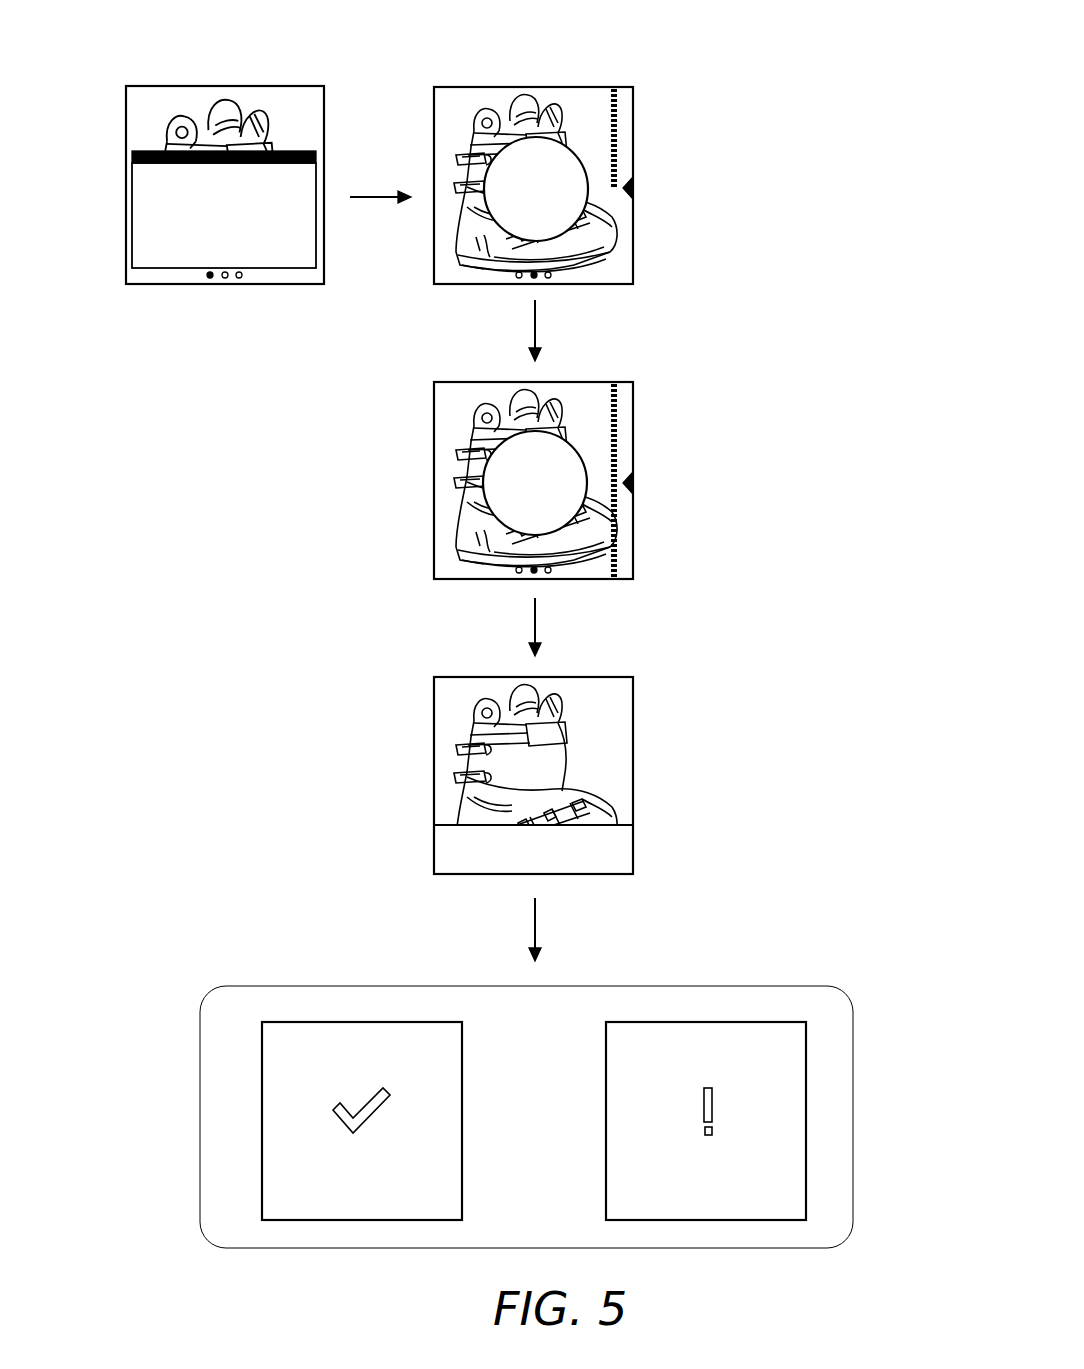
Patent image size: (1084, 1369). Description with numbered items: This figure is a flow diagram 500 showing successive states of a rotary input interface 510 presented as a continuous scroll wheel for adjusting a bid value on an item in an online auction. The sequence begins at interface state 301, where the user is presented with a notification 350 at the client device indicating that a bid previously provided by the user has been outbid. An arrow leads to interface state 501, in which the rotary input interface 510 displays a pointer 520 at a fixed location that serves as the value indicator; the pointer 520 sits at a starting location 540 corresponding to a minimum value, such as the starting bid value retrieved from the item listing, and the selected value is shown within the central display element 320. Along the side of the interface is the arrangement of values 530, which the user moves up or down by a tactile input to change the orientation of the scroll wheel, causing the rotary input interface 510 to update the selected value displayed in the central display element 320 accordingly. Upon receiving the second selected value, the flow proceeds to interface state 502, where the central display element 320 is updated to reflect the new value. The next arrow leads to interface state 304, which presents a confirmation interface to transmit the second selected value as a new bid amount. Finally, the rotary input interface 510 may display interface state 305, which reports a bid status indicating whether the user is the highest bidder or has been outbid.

The user interface flow for raising a bid 500 is at (857, 72).
The interface state 301 is at (244, 178).
The notification 350 is at (133, 287).
The central display element 320 is at (455, 245).
The interface state 501 is at (548, 196).
The arrangement of values 530 is at (620, 97).
The pointer 520 is at (634, 185).
The rotary input interface 510 is at (571, 275).
The interface state 502 is at (553, 499).
The starting location 540 is at (462, 543).
The interface state 304 is at (634, 868).
The interface state 305 is at (838, 988).